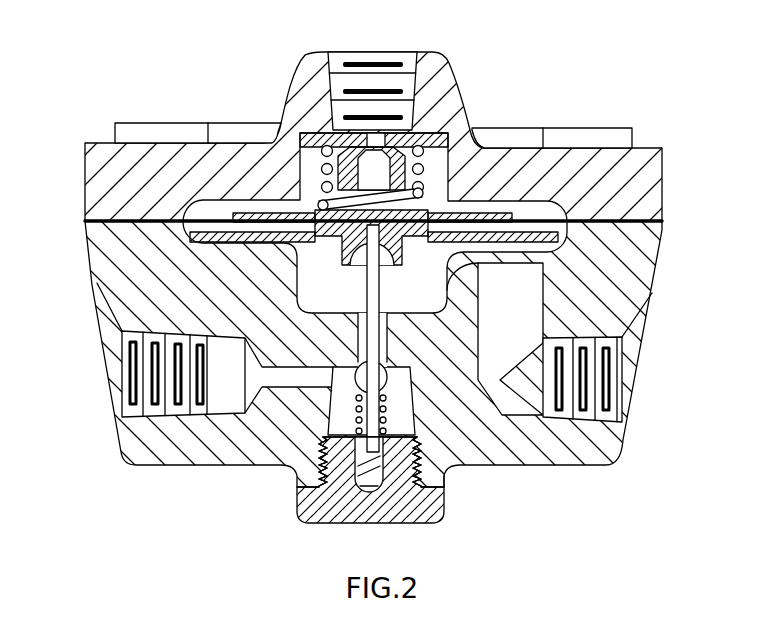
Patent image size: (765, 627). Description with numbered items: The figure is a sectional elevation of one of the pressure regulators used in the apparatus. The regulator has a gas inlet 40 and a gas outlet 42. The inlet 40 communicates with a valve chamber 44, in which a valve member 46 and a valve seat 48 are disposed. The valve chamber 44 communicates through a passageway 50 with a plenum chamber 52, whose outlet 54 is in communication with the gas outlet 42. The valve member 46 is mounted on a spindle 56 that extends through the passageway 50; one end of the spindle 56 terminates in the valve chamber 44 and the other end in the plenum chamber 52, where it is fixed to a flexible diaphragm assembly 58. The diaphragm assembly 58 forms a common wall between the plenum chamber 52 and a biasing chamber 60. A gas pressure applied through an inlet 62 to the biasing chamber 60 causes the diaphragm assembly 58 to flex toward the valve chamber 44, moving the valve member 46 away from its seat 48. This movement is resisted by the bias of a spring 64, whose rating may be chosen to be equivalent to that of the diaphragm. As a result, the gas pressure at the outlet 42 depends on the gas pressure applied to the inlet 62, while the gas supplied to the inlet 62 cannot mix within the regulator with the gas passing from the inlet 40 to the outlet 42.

The gas inlet 40 is at (122, 384).
The gas outlet 42 is at (612, 386).
The valve chamber 44 is at (446, 481).
The valve member 46 is at (325, 440).
The valve seat 48 is at (400, 415).
The passageway 50 is at (383, 335).
The plenum chamber 52 is at (435, 292).
The outlet 54 is at (505, 412).
The spindle 56 is at (371, 283).
The flexible diaphragm assembly 58 is at (487, 217).
The biasing chamber 60 is at (373, 163).
The inlet 62 is at (383, 63).
The spring 64 is at (338, 512).